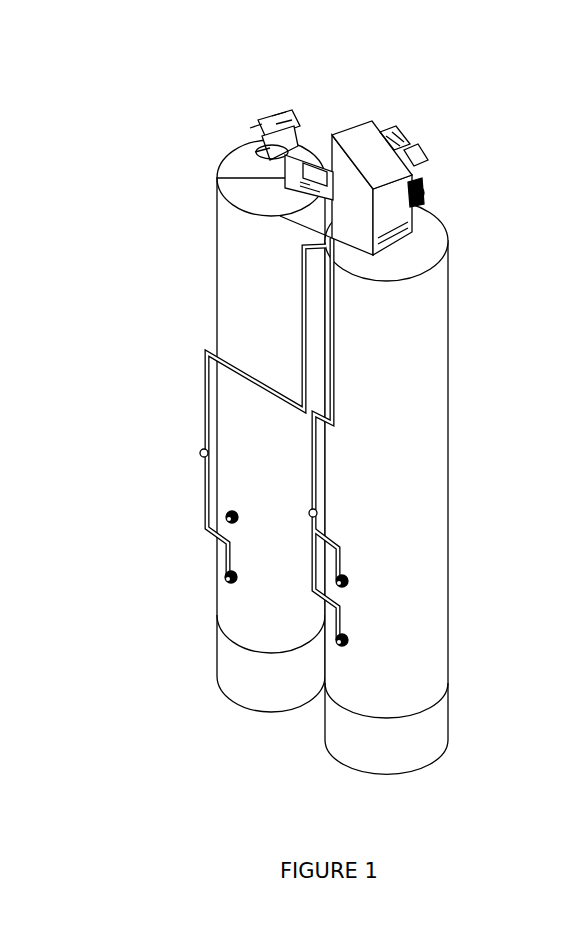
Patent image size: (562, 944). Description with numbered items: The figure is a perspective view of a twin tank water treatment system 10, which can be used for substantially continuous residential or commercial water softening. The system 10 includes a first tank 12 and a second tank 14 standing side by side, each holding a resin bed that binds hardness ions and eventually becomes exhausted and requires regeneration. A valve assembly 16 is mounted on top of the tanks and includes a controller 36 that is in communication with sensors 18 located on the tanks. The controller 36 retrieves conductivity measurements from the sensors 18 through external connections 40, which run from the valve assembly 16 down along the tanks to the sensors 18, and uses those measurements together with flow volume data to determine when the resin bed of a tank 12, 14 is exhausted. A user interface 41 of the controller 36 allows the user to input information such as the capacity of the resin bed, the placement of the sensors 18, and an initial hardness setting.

The twin tank water treatment system 10 is at (300, 403).
The first tank 12 is at (427, 368).
The second tank 14 is at (230, 283).
The valve assembly 16 is at (395, 158).
The sensors 18 is at (225, 578).
The controller 36 is at (380, 212).
The external connections 40 is at (202, 418).
The user interface 41 is at (318, 178).